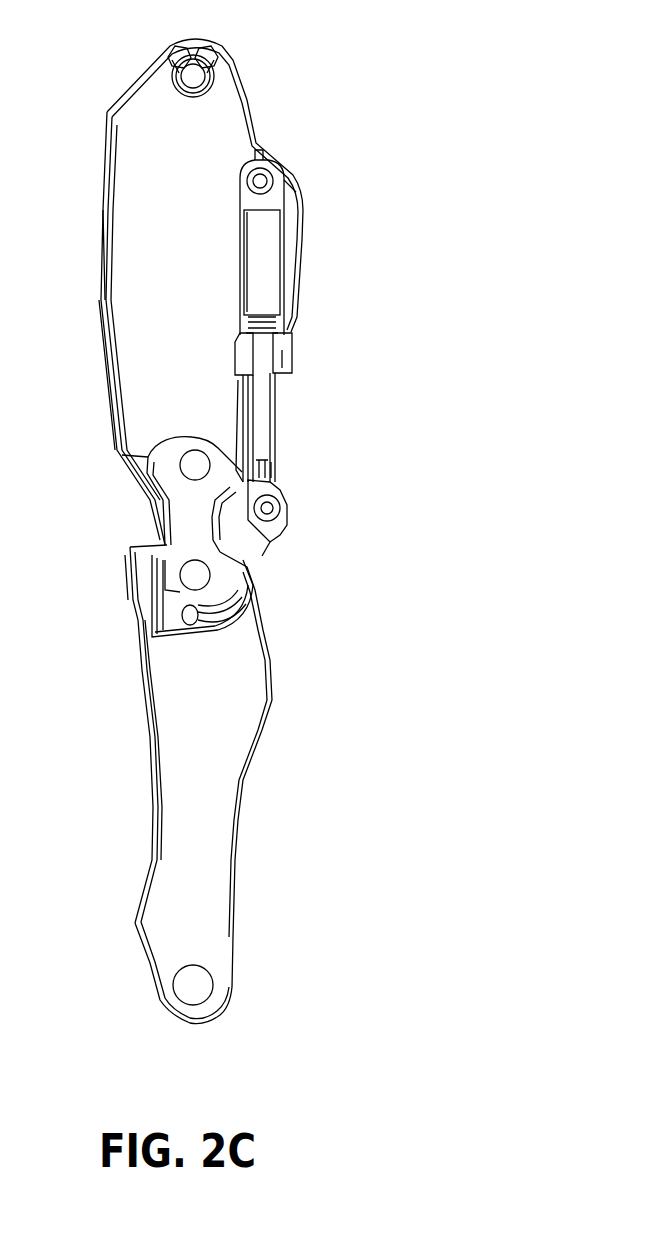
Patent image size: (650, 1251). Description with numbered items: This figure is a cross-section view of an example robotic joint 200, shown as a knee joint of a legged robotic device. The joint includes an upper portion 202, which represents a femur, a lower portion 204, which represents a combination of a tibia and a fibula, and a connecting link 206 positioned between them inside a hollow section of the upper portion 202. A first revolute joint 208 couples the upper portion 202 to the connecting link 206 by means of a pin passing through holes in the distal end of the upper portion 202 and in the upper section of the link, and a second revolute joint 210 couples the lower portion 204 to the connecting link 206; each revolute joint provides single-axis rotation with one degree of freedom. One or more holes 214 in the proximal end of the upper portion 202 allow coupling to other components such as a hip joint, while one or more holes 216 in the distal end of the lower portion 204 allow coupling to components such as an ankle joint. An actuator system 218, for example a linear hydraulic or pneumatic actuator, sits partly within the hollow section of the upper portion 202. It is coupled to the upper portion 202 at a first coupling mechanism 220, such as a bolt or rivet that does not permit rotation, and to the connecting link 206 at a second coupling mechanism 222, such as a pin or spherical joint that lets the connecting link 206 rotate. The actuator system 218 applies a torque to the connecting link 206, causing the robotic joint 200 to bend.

The robotic joint 200 is at (436, 125).
The upper portion 202 is at (100, 305).
The lower portion 204 is at (152, 808).
The connecting link 206 is at (248, 543).
The first revolute joint 208 is at (178, 463).
The second revolute joint 210 is at (178, 568).
The holes 214 is at (168, 80).
The holes 216 is at (173, 985).
The actuator system 218 is at (283, 352).
The first coupling mechanism 220 is at (262, 180).
The second coupling mechanism 222 is at (271, 498).